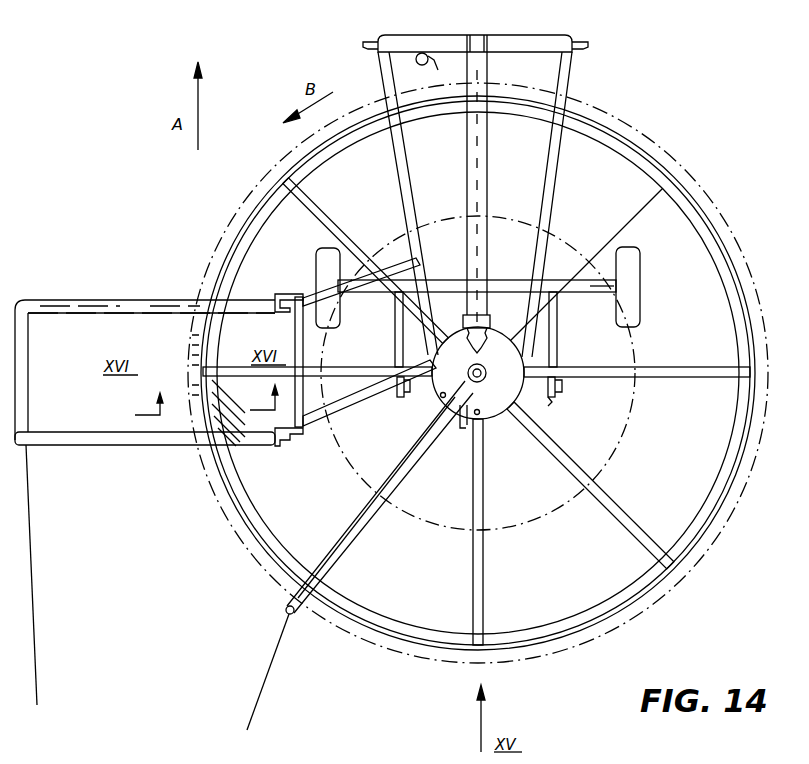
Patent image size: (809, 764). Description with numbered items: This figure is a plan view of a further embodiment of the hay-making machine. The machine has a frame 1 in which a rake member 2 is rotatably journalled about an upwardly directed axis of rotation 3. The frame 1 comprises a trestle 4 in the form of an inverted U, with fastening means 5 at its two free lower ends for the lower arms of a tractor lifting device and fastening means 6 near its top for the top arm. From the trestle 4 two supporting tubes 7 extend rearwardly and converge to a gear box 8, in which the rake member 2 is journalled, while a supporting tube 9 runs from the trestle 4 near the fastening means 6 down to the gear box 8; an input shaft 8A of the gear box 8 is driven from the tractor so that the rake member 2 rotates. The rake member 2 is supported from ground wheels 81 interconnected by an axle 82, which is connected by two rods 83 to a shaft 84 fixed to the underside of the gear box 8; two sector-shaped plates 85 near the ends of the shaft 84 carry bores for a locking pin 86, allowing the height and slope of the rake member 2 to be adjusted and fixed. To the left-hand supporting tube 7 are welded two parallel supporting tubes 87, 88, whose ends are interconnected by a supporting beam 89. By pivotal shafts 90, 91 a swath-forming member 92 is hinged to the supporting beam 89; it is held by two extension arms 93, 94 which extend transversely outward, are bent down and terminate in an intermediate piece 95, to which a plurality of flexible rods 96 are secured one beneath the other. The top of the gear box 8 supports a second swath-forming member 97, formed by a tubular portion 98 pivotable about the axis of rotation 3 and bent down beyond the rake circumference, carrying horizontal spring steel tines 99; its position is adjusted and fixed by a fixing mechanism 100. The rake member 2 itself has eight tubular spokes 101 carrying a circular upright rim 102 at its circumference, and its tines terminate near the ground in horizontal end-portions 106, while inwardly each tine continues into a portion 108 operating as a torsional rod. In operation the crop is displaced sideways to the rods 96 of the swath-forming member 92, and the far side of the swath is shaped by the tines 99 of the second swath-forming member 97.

The frame 1 is at (455, 40).
The rake member 2 is at (706, 180).
The axis of rotation 3 is at (484, 366).
The trestle 4 is at (525, 52).
The fastening means 5 is at (372, 50).
The fastening means 6 is at (474, 35).
The supporting tubes 7 is at (404, 162).
The gear box 8 is at (490, 420).
The input shaft 8A is at (488, 292).
The supporting tube 9 is at (488, 172).
The ground wheels 81 is at (332, 255).
The axle 82 is at (600, 293).
The rods 83 is at (395, 352).
The shaft 84 is at (458, 283).
The sector-shaped plates 85 is at (401, 397).
The locking pin 86 is at (563, 390).
The supporting tube 87 is at (356, 290).
The supporting tube 88 is at (335, 415).
The supporting beam 89 is at (306, 358).
The pivotal shaft 90 is at (284, 296).
The pivotal shaft 91 is at (283, 440).
The swath-forming member 92 is at (77, 300).
The extension arm 93 is at (170, 300).
The extension arm 94 is at (152, 446).
The intermediate piece 95 is at (30, 396).
The flexible rods 96 is at (35, 555).
The second swath-forming member 97 is at (346, 560).
The tubular portion 98 is at (370, 520).
The spring steel tines 99 is at (264, 664).
The fixing mechanism 100 is at (462, 430).
The spokes 101 is at (492, 510).
The rim 102 is at (690, 555).
The end-portion 106 is at (207, 288).
The torsional rod portion 108 is at (222, 350).